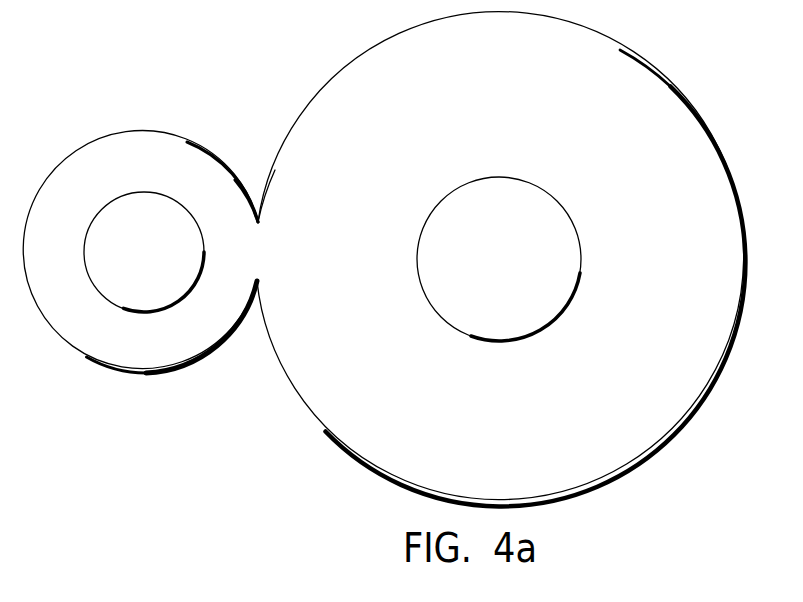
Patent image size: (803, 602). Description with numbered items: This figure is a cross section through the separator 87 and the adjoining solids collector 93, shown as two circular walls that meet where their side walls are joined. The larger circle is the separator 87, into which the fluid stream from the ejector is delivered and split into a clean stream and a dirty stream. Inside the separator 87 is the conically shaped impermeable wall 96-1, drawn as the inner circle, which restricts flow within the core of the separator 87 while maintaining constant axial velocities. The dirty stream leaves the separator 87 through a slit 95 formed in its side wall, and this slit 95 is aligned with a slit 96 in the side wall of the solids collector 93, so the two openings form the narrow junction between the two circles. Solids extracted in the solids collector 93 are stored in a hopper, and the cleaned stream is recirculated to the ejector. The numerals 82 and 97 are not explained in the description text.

The cam plate 82 is at (384, 259).
The solids collector 93 is at (95, 140).
The small bore 97 is at (123, 310).
The slit 96 is at (257, 222).
The slit 95 is at (262, 224).
The conically shaped impermeable wall 96-1 is at (455, 327).
The separator 87 is at (673, 435).